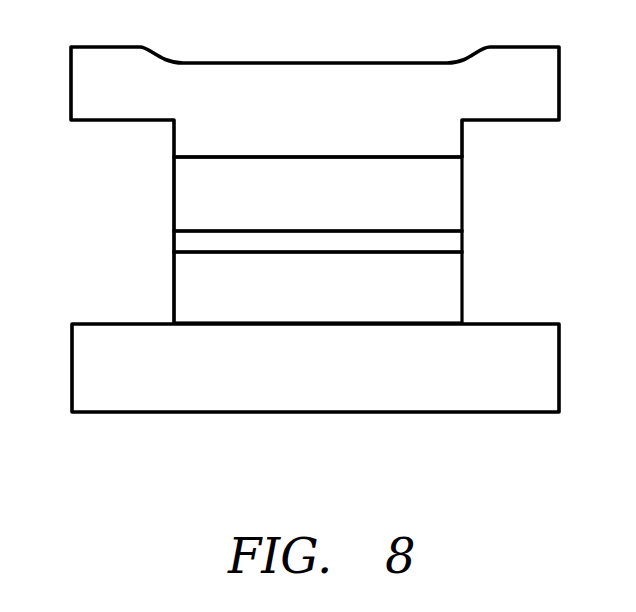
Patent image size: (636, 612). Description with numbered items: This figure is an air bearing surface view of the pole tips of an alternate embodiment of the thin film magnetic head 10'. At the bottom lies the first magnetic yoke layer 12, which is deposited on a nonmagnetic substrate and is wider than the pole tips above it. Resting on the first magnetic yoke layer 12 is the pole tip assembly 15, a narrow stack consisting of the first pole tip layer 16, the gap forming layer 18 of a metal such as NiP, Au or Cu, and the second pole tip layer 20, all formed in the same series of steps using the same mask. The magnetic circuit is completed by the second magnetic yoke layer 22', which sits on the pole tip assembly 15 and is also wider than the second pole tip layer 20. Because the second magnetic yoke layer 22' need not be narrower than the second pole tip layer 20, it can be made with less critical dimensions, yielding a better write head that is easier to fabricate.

The thin film magnetic head 10' is at (94, 445).
The first magnetic yoke layer 12 is at (546, 363).
The pole tip assembly 15 is at (159, 157).
The first pole tip layer 16 is at (447, 300).
The gap forming layer 18 is at (447, 241).
The second pole tip layer 20 is at (447, 197).
The second magnetic yoke layer 22' is at (348, 102).